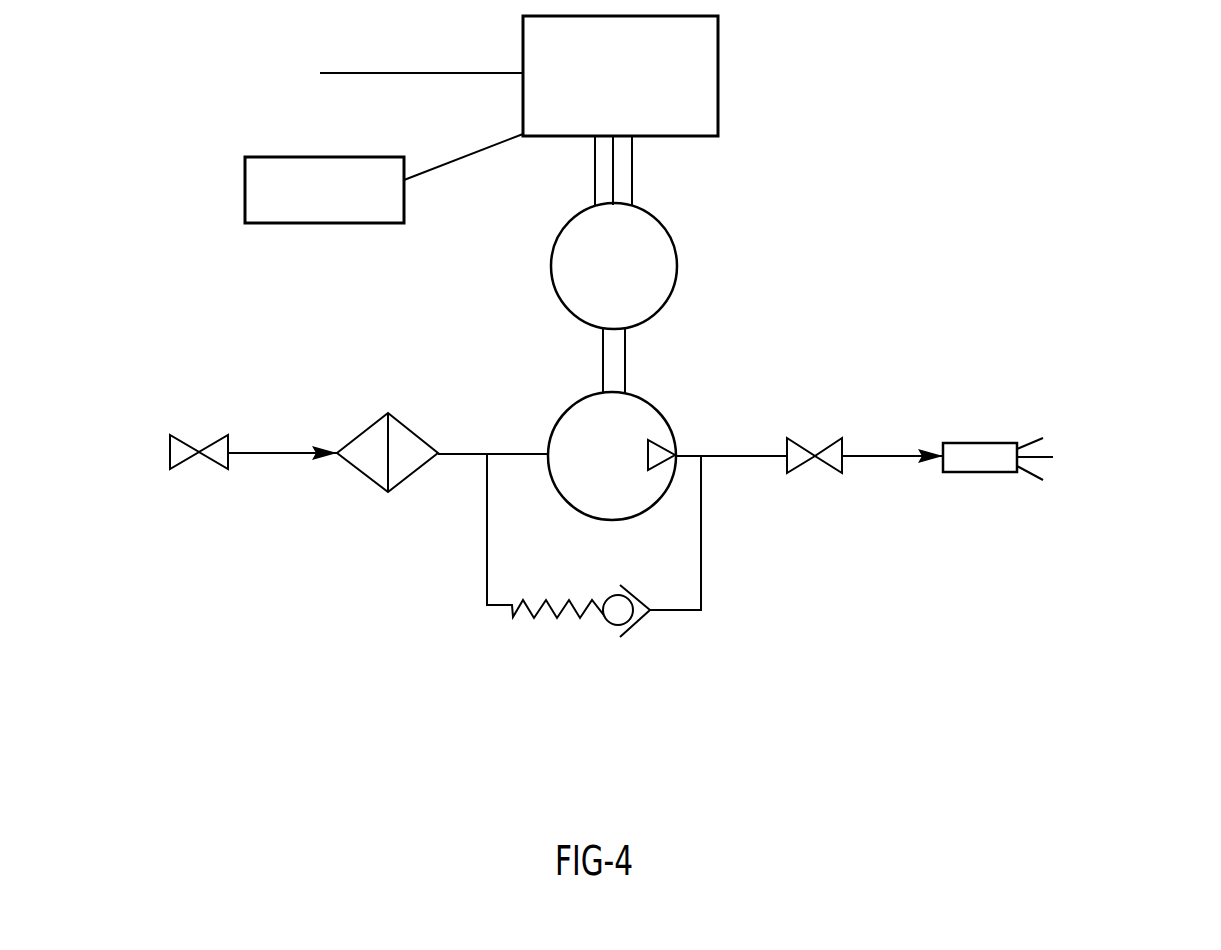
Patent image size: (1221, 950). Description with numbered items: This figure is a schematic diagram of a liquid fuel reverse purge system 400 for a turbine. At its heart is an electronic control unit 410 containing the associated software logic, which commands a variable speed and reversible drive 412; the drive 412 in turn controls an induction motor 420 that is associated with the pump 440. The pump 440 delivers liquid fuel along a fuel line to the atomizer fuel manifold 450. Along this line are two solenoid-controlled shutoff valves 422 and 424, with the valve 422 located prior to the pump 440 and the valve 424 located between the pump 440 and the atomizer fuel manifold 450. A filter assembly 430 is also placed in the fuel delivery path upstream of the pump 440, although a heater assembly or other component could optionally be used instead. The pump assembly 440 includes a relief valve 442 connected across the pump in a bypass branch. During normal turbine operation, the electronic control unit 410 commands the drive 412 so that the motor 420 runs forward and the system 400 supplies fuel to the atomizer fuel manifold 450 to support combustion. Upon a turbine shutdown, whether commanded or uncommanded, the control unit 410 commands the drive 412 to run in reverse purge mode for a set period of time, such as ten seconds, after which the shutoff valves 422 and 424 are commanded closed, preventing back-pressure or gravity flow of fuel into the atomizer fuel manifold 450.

The liquid fuel reverse purge system 400 is at (1056, 89).
The electronic control unit 410 is at (245, 178).
The variable speed and reversible drive 412 is at (718, 72).
The induction motor 420 is at (678, 250).
The solenoid-controlled shutoff valve 422 is at (170, 451).
The solenoid-controlled shutoff valve 424 is at (842, 462).
The filter assembly 430 is at (363, 478).
The pump 440 is at (668, 421).
The relief valve 442 is at (652, 625).
The atomizer fuel manifold 450 is at (1000, 443).